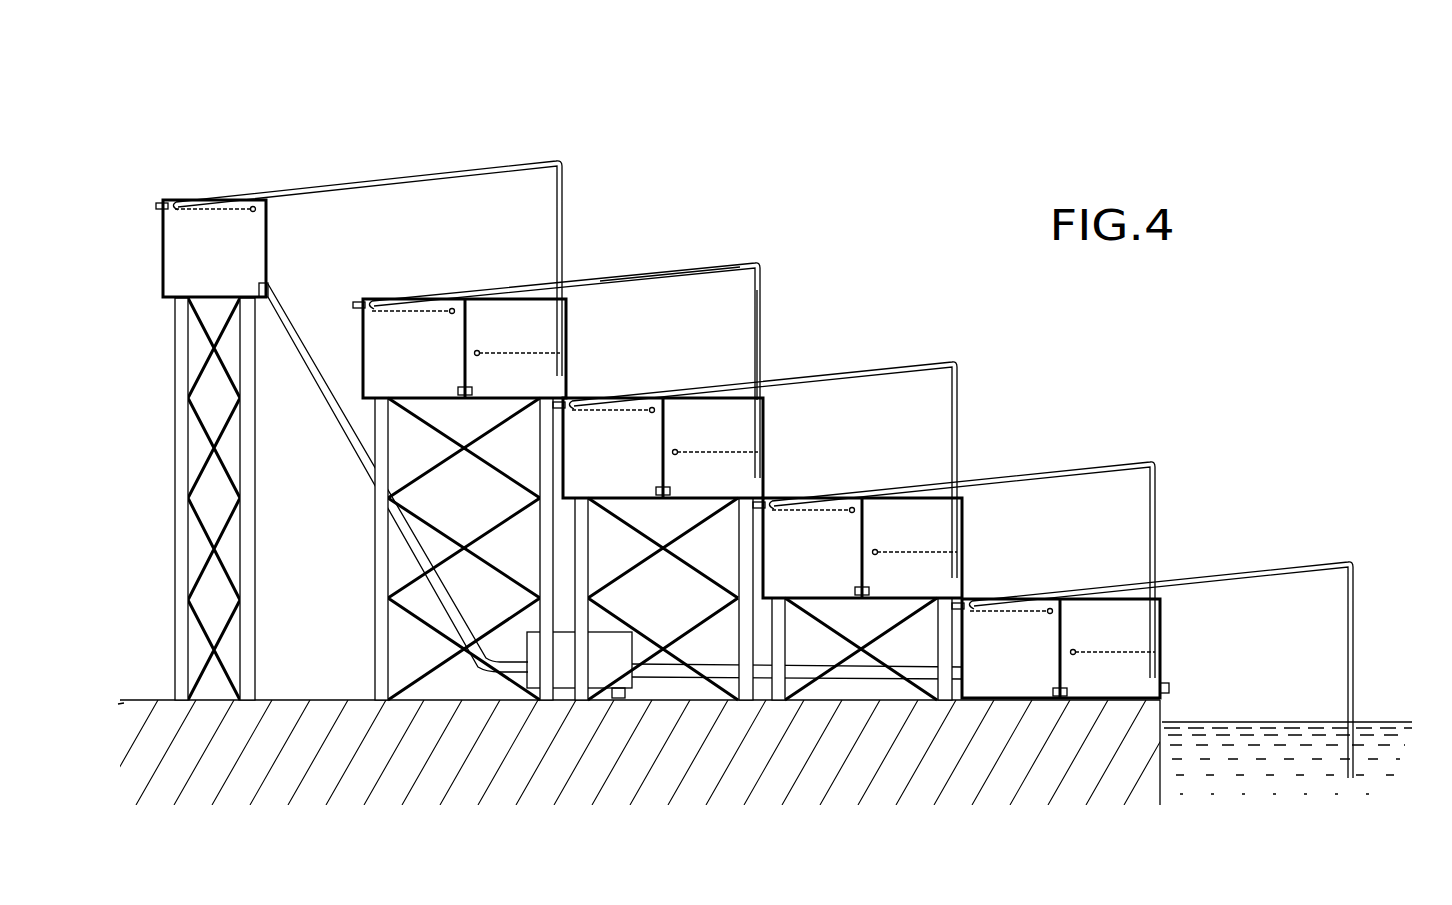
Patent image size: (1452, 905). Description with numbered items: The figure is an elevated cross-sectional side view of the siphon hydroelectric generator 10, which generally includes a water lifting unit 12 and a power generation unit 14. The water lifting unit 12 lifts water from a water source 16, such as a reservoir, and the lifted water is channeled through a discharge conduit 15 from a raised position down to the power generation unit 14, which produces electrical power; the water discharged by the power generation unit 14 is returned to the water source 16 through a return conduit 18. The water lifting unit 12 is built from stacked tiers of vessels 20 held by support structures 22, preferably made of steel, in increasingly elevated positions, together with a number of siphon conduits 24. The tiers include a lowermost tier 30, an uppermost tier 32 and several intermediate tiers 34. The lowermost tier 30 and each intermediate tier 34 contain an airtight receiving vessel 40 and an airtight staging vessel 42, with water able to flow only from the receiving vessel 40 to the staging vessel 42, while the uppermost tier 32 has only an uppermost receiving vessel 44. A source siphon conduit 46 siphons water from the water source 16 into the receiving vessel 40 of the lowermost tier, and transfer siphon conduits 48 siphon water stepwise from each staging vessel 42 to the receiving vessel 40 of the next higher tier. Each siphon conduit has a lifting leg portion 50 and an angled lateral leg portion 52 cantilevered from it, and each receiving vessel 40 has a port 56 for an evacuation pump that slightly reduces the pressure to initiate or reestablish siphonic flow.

The siphon hydroelectric generator 10 is at (252, 130).
The water lifting unit 12 is at (815, 340).
The power generation unit 14 is at (646, 688).
The discharge conduit 15 is at (455, 604).
The water source 16 is at (1373, 740).
The return conduit 18 is at (862, 672).
The stacked tiers of vessels 20 is at (575, 322).
The support structures 22 is at (380, 647).
The siphon conduits 24 is at (960, 426).
The lowermost tier 30 is at (1108, 600).
The uppermost tier 32 is at (273, 225).
The intermediate tiers 34 is at (780, 447).
The receiving vessel 40 is at (1000, 650).
The staging vessel 42 is at (1103, 623).
The uppermost receiving vessel 44 is at (187, 258).
The source siphon conduit 46 is at (1355, 617).
The transfer siphon conduits 48 is at (1078, 467).
The lifting leg portion 50 is at (762, 300).
The angled lateral leg portion 52 is at (727, 263).
The port 56 is at (357, 306).